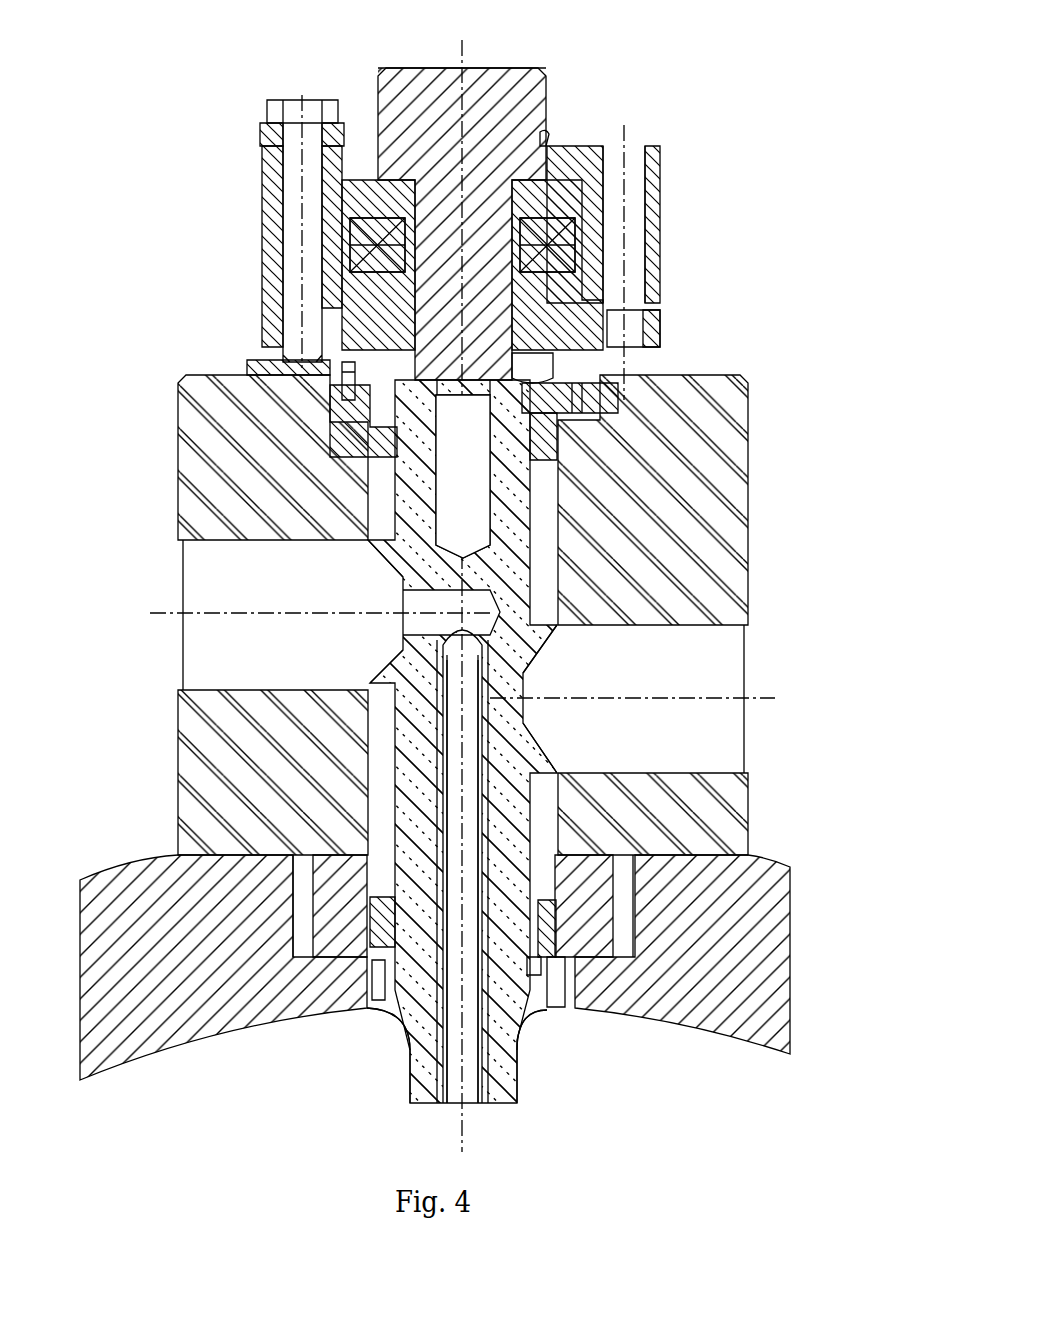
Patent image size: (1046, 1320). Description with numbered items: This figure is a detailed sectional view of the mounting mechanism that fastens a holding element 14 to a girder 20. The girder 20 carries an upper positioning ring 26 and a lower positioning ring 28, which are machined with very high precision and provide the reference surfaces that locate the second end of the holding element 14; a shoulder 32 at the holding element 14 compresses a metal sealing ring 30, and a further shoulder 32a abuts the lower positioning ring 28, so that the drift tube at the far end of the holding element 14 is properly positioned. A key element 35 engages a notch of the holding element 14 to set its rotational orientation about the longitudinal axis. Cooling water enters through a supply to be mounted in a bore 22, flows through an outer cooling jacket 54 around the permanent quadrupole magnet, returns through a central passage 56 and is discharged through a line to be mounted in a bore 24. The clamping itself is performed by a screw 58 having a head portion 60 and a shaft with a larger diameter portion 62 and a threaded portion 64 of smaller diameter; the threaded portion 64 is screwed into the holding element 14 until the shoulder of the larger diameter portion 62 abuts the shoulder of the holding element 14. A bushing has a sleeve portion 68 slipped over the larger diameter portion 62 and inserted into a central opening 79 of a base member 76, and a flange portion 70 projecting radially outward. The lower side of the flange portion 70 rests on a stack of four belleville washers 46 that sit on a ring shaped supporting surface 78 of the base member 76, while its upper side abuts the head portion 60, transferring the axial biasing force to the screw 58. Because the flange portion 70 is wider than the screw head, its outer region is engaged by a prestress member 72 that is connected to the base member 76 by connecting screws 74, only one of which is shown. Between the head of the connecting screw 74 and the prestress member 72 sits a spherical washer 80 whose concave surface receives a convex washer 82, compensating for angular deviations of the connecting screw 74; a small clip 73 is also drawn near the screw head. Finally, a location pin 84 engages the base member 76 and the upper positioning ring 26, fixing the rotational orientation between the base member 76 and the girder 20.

The holding element 14 is at (530, 1101).
The girder 20 is at (742, 422).
The bore 22 is at (740, 738).
The bore 24 is at (195, 632).
The upper positioning ring 26 is at (267, 380).
The lower positioning ring 28 is at (366, 1005).
The metal sealing ring 30 is at (565, 983).
The shoulder 32 is at (560, 990).
The seal ring 32a is at (382, 1002).
The key element 35 is at (600, 395).
The belleville washers 46 is at (578, 232).
The outer cooling jacket 54 is at (420, 1080).
The central passage 56 is at (467, 1083).
The screw 58 is at (522, 52).
The head portion 60 is at (512, 132).
The larger diameter portion 62 is at (500, 297).
The threaded portion 64 is at (500, 466).
The sleeve portion 68 is at (545, 285).
The flange portion 70 is at (610, 190).
The prestress member 72 is at (262, 160).
The retaining clip 73 is at (546, 142).
The connecting screw 74 is at (290, 190).
The base member 76 is at (655, 328).
The ring shaped supporting surface 78 is at (355, 262).
The central opening 79 is at (525, 340).
The spherical washer 80 is at (345, 127).
The washer 82 is at (250, 125).
The location pin 84 is at (349, 362).